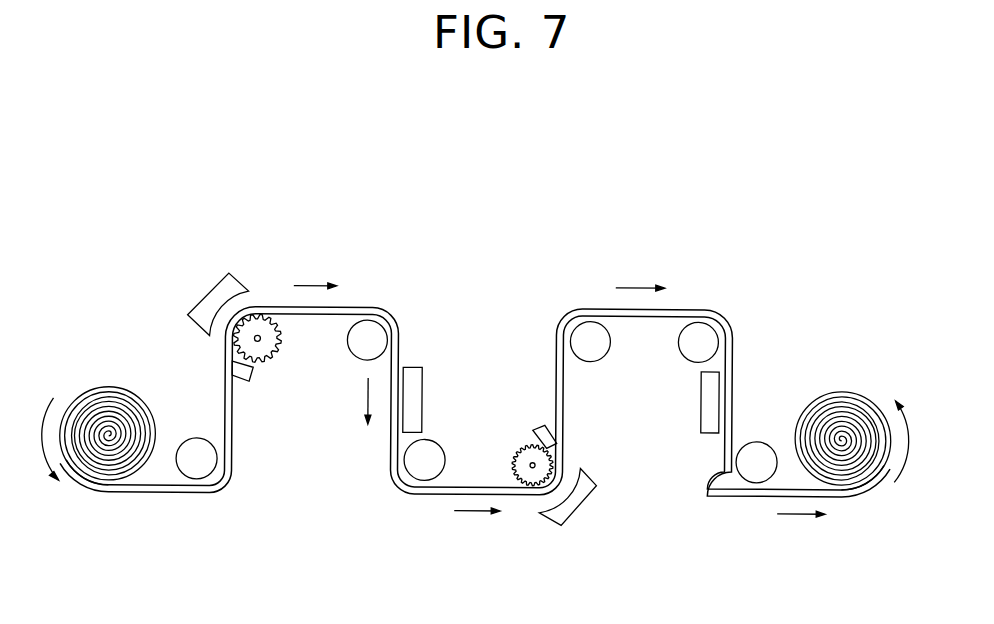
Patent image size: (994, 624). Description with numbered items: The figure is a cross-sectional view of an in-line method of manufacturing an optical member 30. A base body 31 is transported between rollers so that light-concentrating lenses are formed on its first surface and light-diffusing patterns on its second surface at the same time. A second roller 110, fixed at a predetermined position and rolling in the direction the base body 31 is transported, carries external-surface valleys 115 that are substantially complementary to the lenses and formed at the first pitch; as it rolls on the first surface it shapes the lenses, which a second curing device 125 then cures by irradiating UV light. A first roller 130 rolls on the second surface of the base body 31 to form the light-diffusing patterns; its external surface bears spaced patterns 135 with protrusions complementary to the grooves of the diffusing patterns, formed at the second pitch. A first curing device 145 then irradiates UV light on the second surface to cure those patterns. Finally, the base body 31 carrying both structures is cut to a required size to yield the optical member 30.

The optical member 30 is at (763, 494).
The base body 31 is at (158, 494).
The second roller 110 is at (262, 345).
The valleys 115 is at (287, 316).
The second curing device 125 is at (413, 368).
The first roller 130 is at (533, 466).
The patterns 135 is at (520, 450).
The first curing device 145 is at (701, 402).